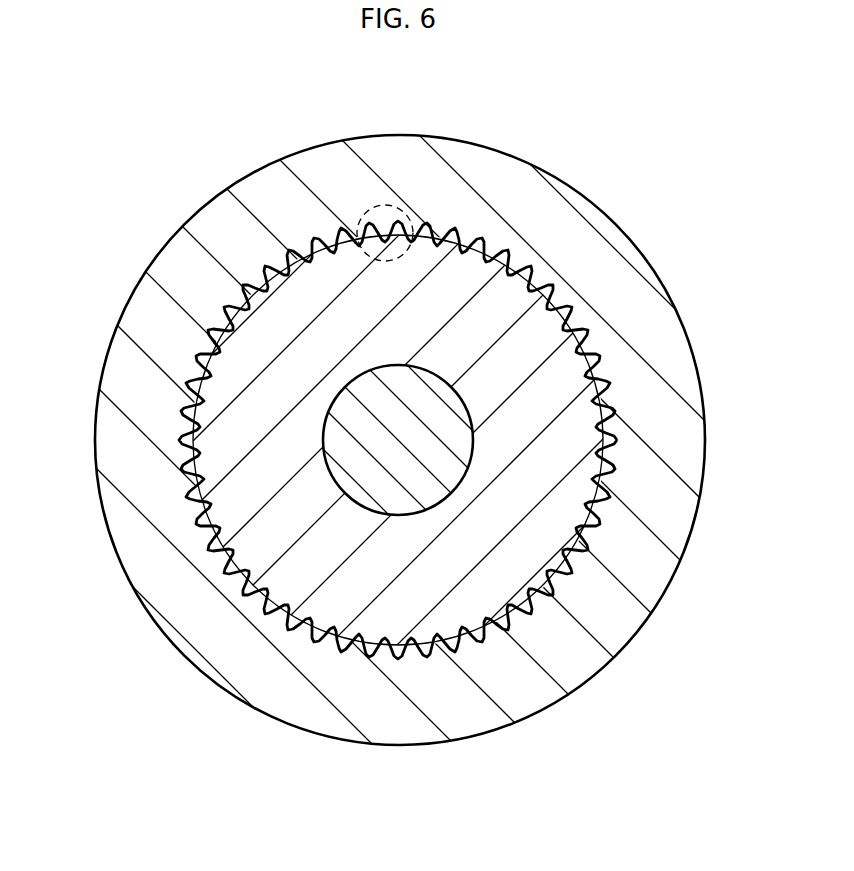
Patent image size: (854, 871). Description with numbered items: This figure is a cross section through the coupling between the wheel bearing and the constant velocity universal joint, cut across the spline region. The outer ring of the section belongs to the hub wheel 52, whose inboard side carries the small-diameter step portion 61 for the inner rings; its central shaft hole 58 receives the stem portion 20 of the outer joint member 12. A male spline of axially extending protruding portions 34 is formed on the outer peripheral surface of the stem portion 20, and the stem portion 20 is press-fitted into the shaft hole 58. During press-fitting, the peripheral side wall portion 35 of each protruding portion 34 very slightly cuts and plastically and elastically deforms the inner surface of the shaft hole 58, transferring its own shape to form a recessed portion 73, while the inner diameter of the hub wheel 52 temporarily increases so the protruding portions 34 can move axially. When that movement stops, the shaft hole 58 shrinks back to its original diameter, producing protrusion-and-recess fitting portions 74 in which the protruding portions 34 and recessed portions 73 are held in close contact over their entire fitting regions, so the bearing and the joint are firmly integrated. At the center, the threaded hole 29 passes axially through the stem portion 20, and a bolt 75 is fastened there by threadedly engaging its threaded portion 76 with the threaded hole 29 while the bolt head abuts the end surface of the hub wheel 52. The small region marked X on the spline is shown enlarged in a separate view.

The outer joint member 12 is at (528, 597).
The stem portion 20 is at (548, 540).
The threaded hole 29 is at (325, 428).
The protruding portions 34 is at (607, 403).
The peripheral side wall portion 35 is at (268, 273).
The hub wheel 52 is at (623, 217).
The shaft hole 58 is at (437, 635).
The small-diameter step portion 61 is at (322, 162).
The recessed portion 73 is at (531, 275).
The protrusion-and-recess fitting portions 74 is at (175, 433).
The bolt 75 is at (474, 460).
The threaded portion 76 is at (252, 563).
The portion X is at (400, 211).